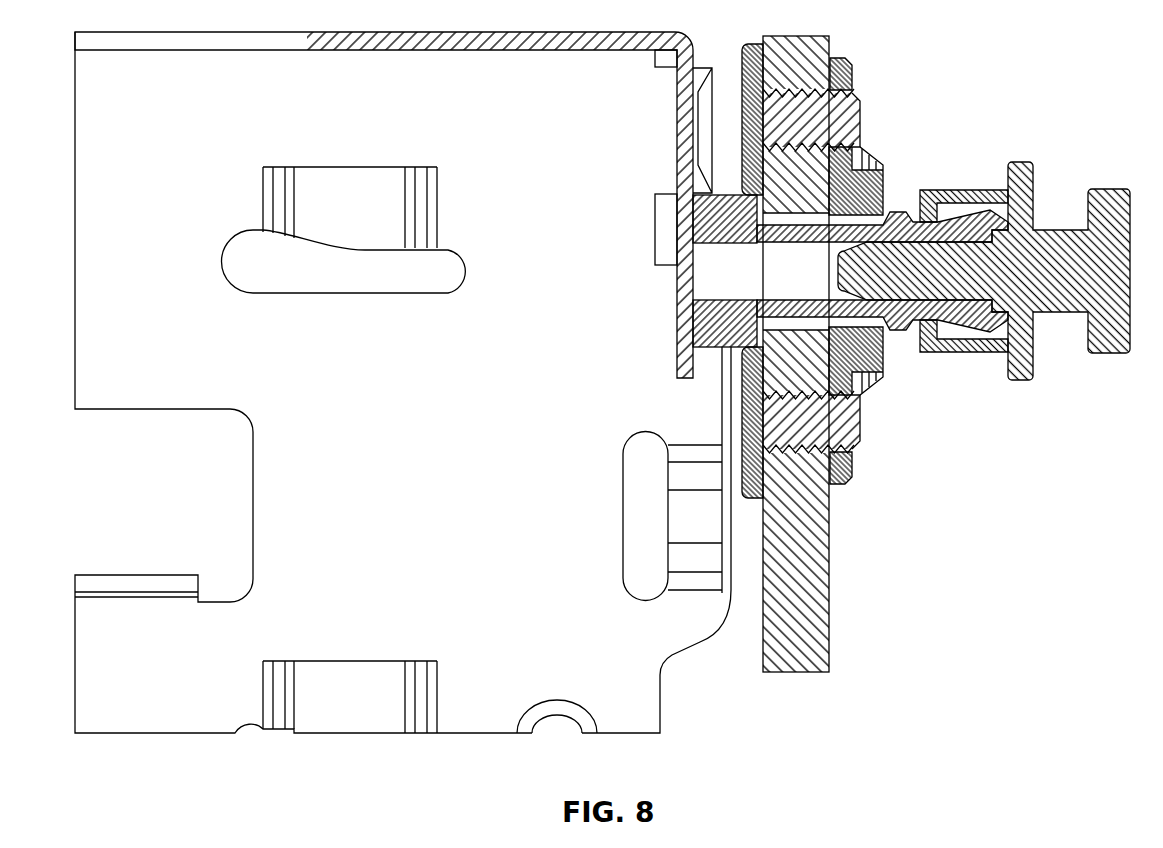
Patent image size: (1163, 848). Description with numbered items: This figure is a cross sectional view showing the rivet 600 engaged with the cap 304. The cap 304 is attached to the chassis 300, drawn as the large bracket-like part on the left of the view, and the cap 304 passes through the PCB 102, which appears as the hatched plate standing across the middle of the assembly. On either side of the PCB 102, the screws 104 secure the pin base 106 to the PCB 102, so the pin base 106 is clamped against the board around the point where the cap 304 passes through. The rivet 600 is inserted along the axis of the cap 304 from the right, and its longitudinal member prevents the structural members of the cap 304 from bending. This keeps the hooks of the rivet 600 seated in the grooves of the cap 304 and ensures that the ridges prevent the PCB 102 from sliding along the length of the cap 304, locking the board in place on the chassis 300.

The chassis 300 is at (680, 38).
The PCB 102 is at (822, 563).
The screws 104 is at (857, 100).
The pin base 106 is at (850, 65).
The cap 304 is at (903, 222).
The rivet 600 is at (1107, 355).